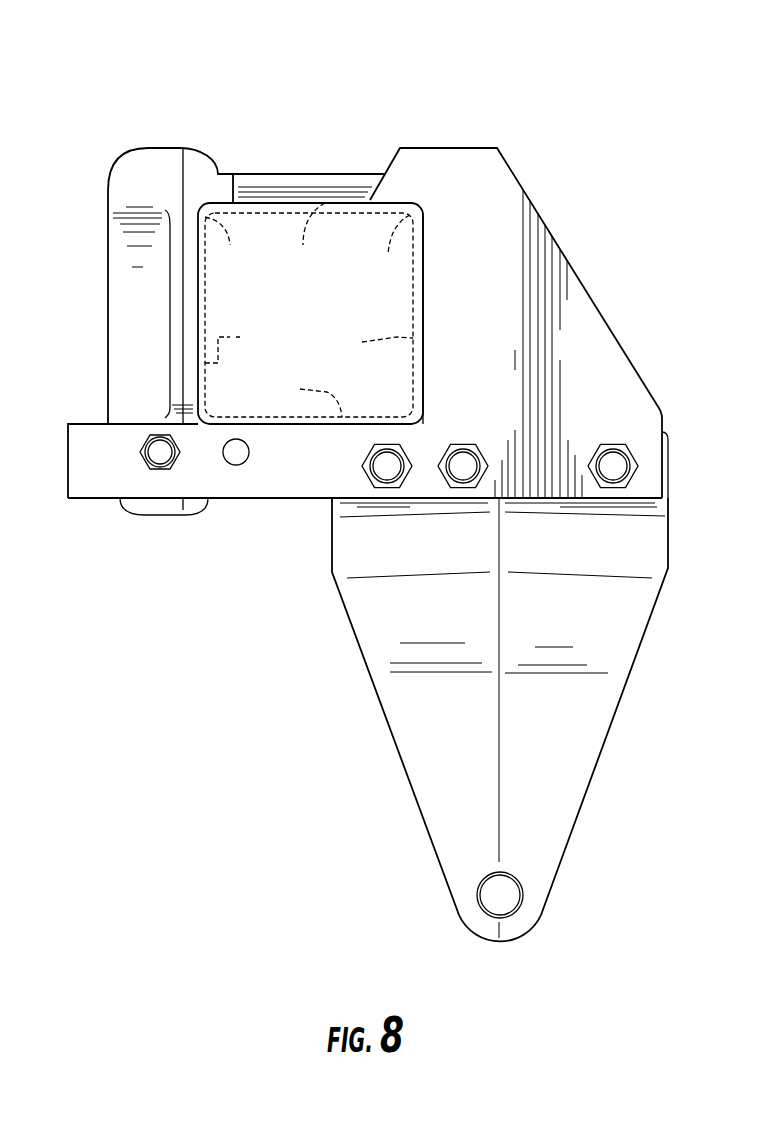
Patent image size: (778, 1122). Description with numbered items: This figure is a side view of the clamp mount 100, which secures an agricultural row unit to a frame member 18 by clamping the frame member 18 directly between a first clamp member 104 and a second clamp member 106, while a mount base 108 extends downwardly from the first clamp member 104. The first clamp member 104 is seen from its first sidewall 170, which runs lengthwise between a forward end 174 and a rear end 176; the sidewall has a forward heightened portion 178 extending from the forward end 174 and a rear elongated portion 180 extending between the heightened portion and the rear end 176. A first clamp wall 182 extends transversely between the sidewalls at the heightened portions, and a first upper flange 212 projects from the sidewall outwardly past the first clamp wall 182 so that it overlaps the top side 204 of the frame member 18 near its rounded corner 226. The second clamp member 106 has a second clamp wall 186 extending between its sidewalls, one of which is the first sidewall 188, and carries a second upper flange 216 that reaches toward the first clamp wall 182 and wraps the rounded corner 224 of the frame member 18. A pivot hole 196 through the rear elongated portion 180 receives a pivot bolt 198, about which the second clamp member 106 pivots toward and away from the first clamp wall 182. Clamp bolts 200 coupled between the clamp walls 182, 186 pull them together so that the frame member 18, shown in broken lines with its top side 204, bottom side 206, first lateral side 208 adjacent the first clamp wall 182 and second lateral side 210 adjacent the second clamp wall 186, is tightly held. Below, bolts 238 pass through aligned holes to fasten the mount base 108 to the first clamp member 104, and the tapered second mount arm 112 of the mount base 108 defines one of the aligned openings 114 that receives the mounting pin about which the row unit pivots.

The clamp mount 100 is at (598, 84).
The first clamp member 104 is at (552, 224).
The second clamp member 106 is at (110, 191).
The mount base 108 is at (628, 690).
The second mount arm 112 is at (573, 777).
The aligned openings 114 is at (510, 893).
The first sidewall 170 is at (560, 321).
The forward end 174 is at (663, 462).
The rear end 176 is at (67, 452).
The forward heightened portion 178 is at (540, 368).
The rear elongated portion 180 is at (295, 480).
The first clamp wall 182 is at (422, 313).
The second clamp wall 186 is at (203, 318).
The first sidewall 188 is at (138, 280).
The pivot hole 196 is at (238, 460).
The pivot bolt 198 is at (160, 453).
The clamp bolts 200 is at (293, 178).
The top side 204 is at (305, 240).
The bottom side 206 is at (301, 392).
The first lateral side 208 is at (369, 338).
The second lateral side 210 is at (237, 341).
The first upper flange 212 is at (400, 188).
The second upper flange 216 is at (218, 186).
The rounded corner 224 is at (227, 249).
The rounded corner 226 is at (389, 254).
The bolts 238 is at (463, 468).
The frame member 18 is at (329, 320).